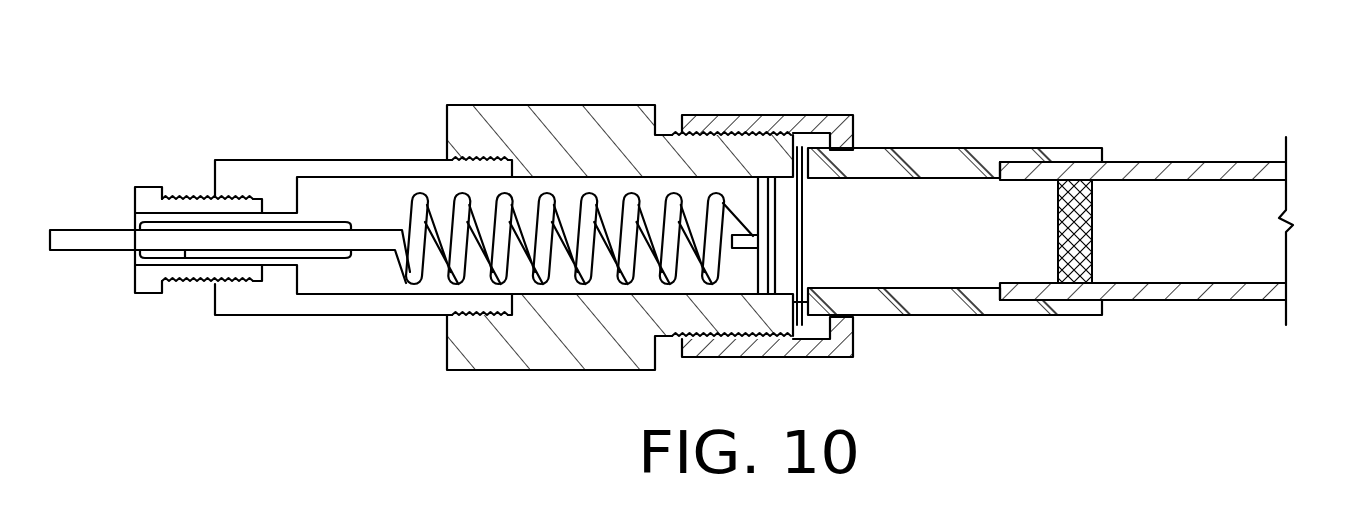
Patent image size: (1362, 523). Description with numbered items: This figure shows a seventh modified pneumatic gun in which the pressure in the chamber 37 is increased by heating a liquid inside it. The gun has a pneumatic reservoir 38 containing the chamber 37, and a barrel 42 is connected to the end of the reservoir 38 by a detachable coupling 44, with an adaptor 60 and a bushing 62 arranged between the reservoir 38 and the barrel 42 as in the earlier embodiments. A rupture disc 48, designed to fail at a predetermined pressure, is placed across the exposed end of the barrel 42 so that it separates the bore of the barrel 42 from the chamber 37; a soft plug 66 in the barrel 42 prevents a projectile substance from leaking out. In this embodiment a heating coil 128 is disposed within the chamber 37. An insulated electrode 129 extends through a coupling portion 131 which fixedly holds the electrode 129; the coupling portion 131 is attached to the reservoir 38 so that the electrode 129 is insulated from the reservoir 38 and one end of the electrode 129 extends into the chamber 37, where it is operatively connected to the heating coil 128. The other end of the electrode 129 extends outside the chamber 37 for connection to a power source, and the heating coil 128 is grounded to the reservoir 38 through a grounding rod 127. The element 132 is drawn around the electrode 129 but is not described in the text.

The chamber 37 is at (382, 287).
The pneumatic reservoir 38 is at (278, 182).
The barrel 42 is at (1172, 162).
The coupling 44 is at (737, 115).
The rupture disc 48 is at (800, 240).
The adaptor 60 is at (557, 105).
The bushing 62 is at (935, 315).
The soft plug 66 is at (1092, 237).
The grounding rod 127 is at (767, 225).
The heating coil 128 is at (673, 197).
The insulated electrode 129 is at (78, 243).
The coupling portion 131 is at (150, 188).
The sleeve 132 is at (183, 254).